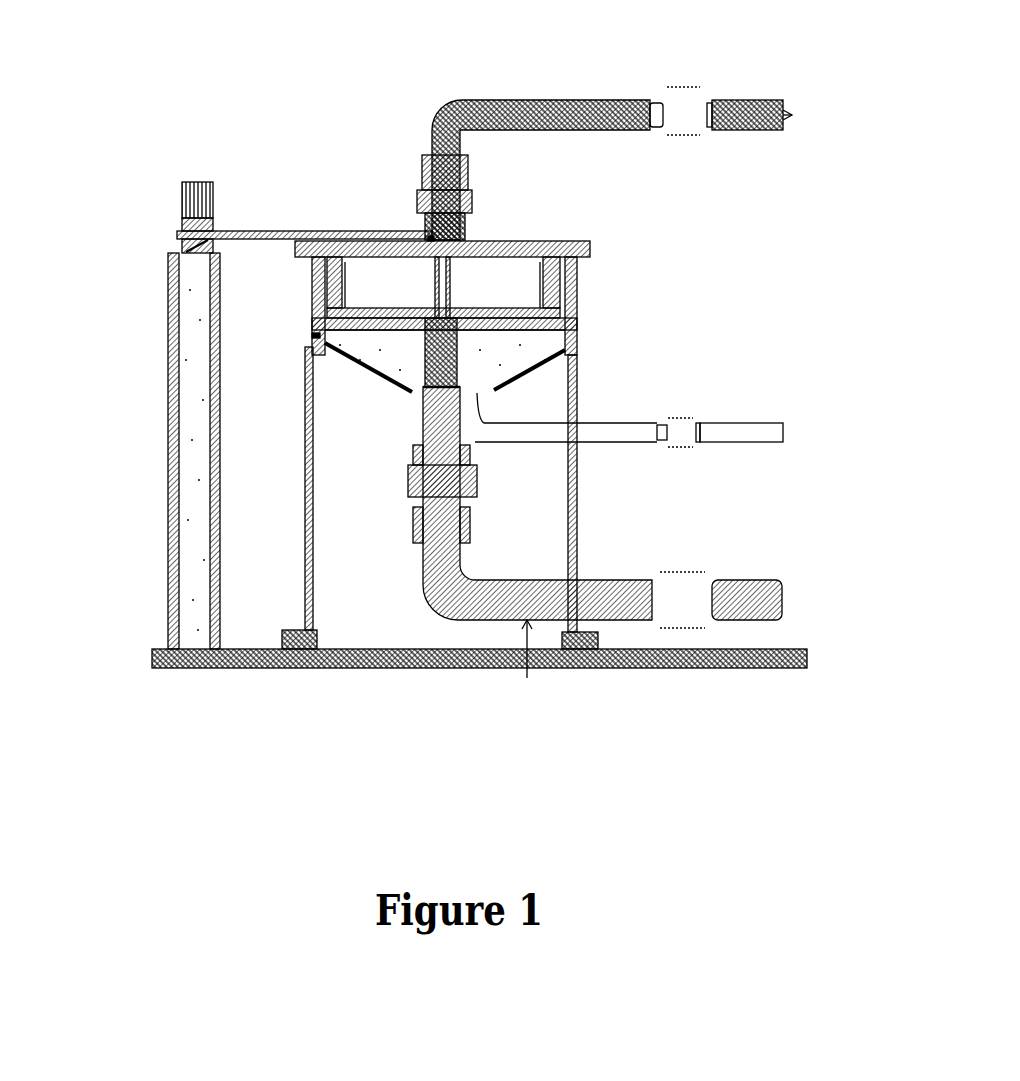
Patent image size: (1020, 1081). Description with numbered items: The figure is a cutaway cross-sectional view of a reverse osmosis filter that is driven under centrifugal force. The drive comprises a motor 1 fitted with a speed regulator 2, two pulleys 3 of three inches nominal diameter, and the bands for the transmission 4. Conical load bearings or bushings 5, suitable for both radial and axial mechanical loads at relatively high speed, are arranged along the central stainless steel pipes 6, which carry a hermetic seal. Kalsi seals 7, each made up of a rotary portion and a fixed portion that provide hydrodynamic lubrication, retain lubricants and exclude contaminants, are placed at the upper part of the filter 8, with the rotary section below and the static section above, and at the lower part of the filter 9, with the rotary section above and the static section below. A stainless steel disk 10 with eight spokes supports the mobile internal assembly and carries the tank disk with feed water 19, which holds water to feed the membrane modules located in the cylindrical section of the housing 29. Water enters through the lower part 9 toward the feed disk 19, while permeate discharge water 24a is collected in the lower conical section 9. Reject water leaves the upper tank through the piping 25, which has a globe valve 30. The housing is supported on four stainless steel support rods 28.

The motor 1 is at (176, 197).
The speed regulator 2 is at (176, 229).
The pulleys 3 is at (182, 242).
The bands for the transmission 4 is at (255, 228).
The bushings 5 is at (428, 236).
The central stainless steel pipes 6 is at (462, 288).
The Kalsi seals 7 is at (470, 178).
The upper part of the filter 8 is at (575, 240).
The lower part of the filter 9 is at (420, 366).
The stainless steel disk 10 is at (310, 323).
The tank disk with feed water 19 is at (558, 313).
The permeate discharge water piping 24a is at (752, 420).
The piping 25 is at (498, 100).
The support rods 28 is at (572, 538).
The cylindrical section of the housing 29 is at (285, 255).
The globe valve 30 is at (668, 82).